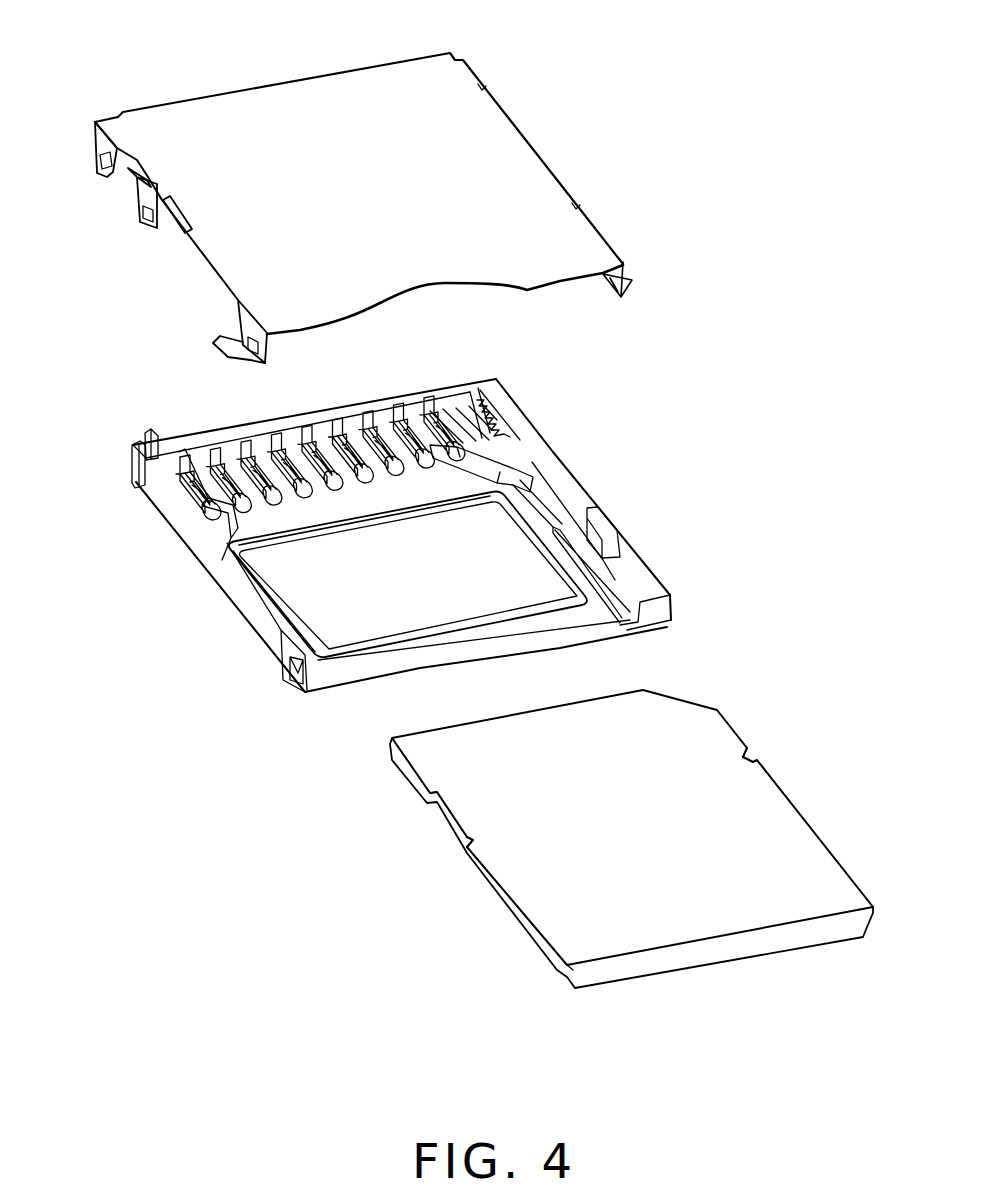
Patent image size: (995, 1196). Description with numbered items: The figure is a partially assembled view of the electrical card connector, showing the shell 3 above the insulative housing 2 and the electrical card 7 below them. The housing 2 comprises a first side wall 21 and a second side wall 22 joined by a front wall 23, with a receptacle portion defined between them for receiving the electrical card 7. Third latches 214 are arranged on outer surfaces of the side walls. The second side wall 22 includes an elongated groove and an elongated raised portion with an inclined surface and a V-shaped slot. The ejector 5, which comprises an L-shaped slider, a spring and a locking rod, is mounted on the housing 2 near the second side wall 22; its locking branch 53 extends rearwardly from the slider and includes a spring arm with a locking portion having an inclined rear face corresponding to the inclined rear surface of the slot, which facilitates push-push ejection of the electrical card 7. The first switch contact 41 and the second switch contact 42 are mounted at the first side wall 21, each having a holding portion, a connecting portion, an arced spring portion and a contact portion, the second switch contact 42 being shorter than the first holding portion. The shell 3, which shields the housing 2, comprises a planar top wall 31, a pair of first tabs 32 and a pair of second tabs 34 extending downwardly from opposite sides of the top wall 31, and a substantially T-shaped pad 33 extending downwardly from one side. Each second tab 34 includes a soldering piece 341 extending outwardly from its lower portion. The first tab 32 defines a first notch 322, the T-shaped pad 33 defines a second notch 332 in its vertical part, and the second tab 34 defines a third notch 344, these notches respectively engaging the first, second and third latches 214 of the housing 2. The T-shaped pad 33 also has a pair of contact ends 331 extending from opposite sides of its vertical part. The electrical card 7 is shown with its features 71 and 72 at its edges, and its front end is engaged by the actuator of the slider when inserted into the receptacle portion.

The insulative housing 2 is at (403, 562).
The shell 3 is at (344, 201).
The ejector 5 is at (550, 473).
The electrical card 7 is at (622, 839).
The first side wall 21 is at (221, 614).
The second side wall 22 is at (637, 578).
The front wall 23 is at (197, 442).
The planar top wall 31 is at (349, 97).
The first tab 32 is at (60, 122).
The T-shaped pad 33 is at (126, 228).
The second tab 34 is at (206, 351).
The first switch contact 41 is at (223, 535).
The second switch contact 42 is at (136, 483).
The locking branch 53 is at (547, 515).
The notch of card 71 is at (758, 760).
The recess of card 72 is at (452, 822).
The third latch 214 is at (297, 677).
The first notch 322 is at (98, 160).
The contact end 331 is at (177, 235).
The second notch 332 is at (147, 223).
The soldering piece 341 is at (205, 351).
The third notch 344 is at (258, 363).